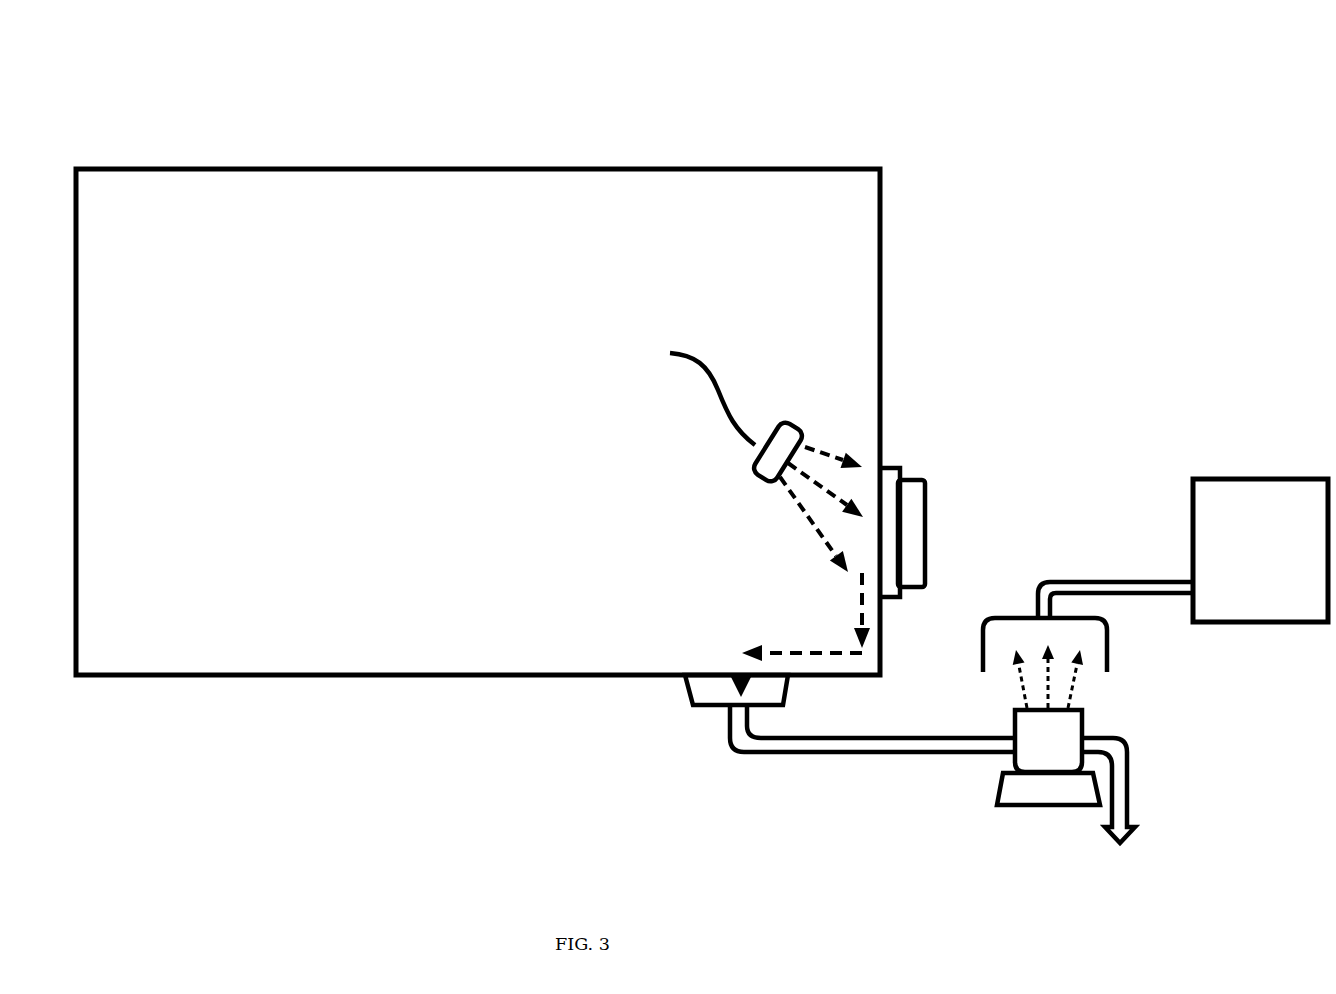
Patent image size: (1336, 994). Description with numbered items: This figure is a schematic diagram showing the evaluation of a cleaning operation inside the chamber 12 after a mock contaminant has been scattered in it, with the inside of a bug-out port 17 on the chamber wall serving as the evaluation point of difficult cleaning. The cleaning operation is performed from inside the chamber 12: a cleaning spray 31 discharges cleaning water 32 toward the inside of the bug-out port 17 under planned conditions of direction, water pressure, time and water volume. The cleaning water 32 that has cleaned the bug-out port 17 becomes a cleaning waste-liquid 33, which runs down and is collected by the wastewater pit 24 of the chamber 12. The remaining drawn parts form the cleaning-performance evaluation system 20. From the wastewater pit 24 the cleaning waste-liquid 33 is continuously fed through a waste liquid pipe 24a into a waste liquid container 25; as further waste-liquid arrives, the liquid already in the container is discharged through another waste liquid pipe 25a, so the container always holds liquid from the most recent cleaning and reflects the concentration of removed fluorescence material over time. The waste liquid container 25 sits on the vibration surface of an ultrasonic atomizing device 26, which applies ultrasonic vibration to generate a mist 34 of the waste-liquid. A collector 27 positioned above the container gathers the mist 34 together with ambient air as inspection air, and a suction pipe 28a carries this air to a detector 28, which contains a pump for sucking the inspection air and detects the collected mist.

The chamber 12 is at (268, 168).
The bug-out port 17 is at (912, 508).
The cleaning-performance evaluation system 20 is at (1080, 291).
The wastewater pit 24 is at (686, 688).
The waste liquid pipe 24a is at (856, 757).
The waste liquid container 25 is at (1037, 752).
The waste liquid pipe 25a is at (1133, 795).
The ultrasonic atomizing device 26 is at (1048, 785).
The collector 27 is at (1107, 640).
The detector 28 is at (1225, 507).
The suction pipe 28a is at (1123, 578).
The cleaning spray 31 is at (770, 457).
The cleaning water 32 is at (838, 427).
The cleaning waste-liquid 33 is at (786, 636).
The mist 34 is at (1012, 686).